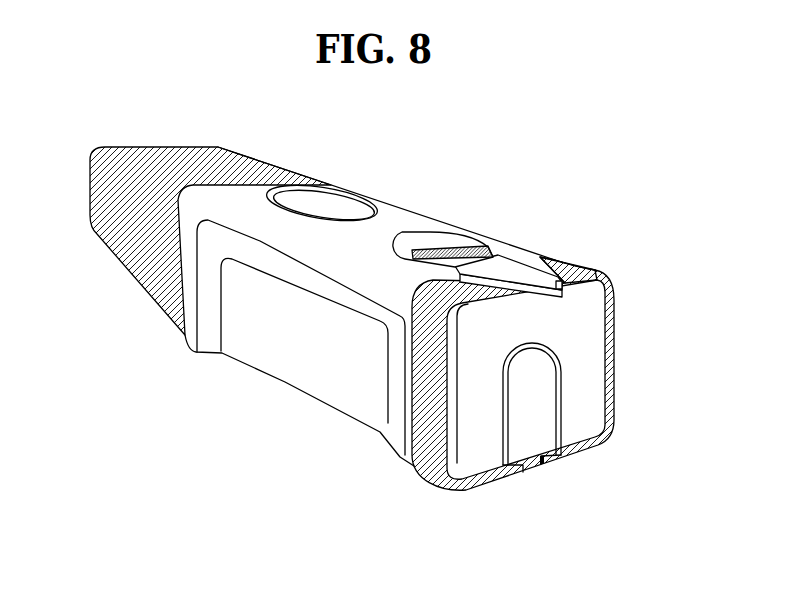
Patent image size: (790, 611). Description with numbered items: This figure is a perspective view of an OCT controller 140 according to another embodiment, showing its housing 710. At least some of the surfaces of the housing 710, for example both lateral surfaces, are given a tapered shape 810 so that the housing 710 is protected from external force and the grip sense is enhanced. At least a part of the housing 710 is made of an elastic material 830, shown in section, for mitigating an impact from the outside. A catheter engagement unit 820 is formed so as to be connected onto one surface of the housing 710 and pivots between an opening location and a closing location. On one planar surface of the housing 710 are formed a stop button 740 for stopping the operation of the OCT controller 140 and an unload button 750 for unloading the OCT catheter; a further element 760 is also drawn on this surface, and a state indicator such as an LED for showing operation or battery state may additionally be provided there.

The OCT controller 140 is at (376, 336).
The housing 710 is at (387, 220).
The stop button 740 is at (433, 240).
The unload button 750 is at (530, 265).
The slot cover 760 is at (504, 266).
The tapered shape 810 is at (213, 318).
The catheter engagement unit 820 is at (585, 335).
The elastic material 830 is at (107, 230).